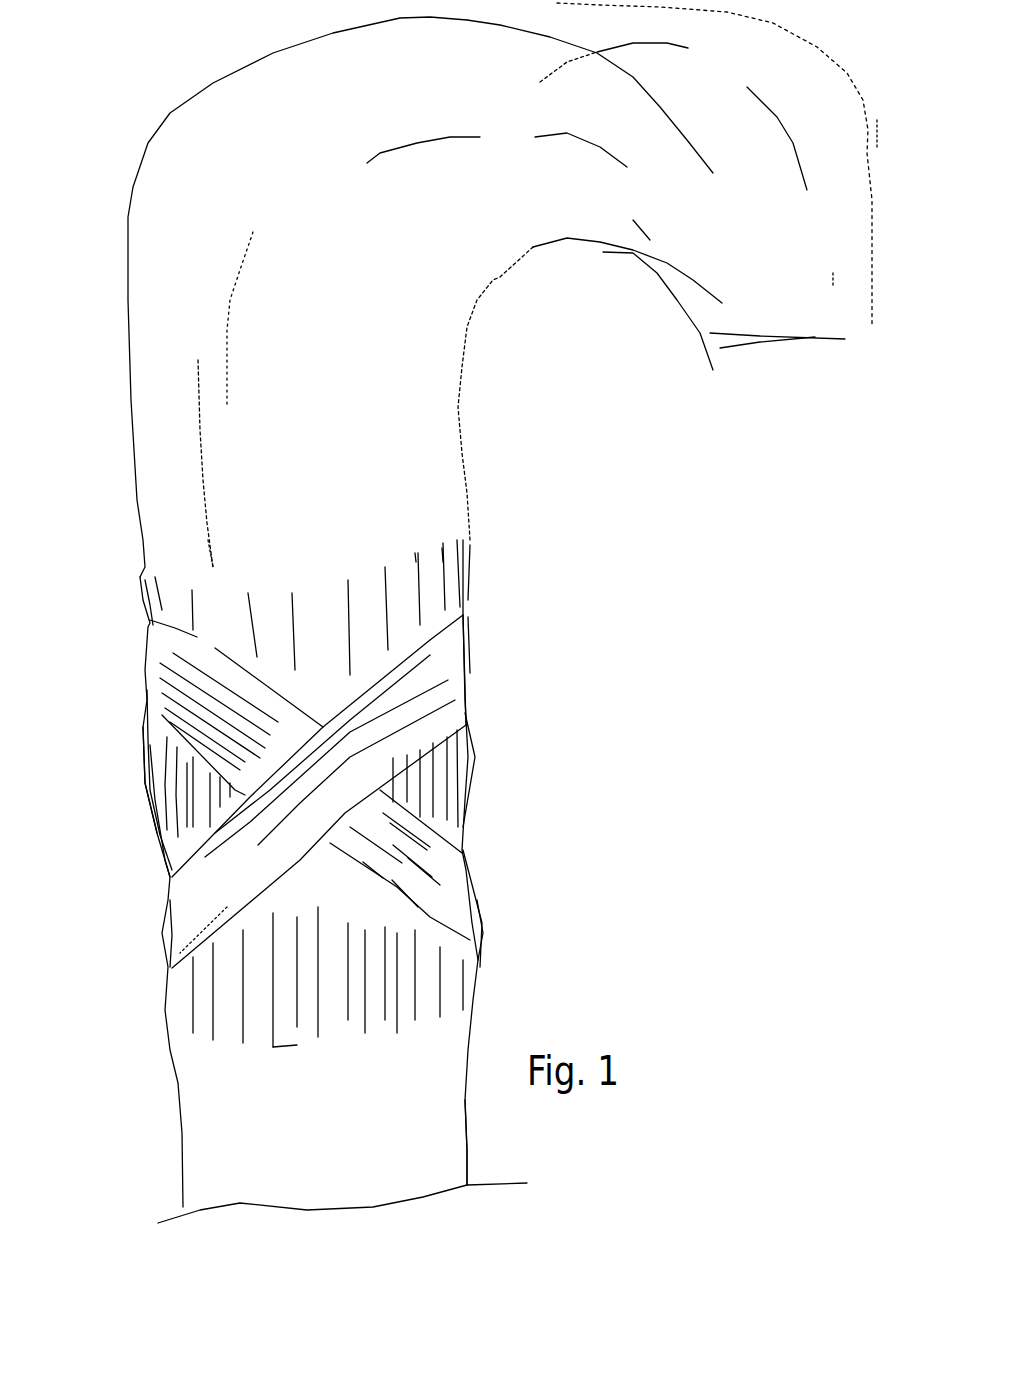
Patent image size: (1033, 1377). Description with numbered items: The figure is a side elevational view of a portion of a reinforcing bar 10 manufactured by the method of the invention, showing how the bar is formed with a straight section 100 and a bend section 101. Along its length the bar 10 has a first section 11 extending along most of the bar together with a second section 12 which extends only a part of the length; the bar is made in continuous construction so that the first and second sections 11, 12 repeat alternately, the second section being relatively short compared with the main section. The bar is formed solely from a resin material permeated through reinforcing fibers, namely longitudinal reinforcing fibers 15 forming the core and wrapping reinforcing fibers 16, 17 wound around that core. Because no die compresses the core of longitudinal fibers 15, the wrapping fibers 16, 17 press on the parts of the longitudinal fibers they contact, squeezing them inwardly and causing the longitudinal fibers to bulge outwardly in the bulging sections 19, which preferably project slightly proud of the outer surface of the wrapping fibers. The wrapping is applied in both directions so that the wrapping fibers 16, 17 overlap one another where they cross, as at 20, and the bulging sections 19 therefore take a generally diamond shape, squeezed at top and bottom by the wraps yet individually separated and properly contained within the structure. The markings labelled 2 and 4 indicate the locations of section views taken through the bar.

The bend section 101 is at (502, 290).
The straight section 100 is at (530, 876).
The reinforcing bar 10 is at (389, 753).
The first section 11 is at (92, 812).
The second section 12 is at (513, 1142).
The longitudinal reinforcing fibers 15 is at (260, 982).
The wrapping reinforcing fiber 16 is at (344, 794).
The wrapping reinforcing fiber 17 is at (349, 791).
The bulging sections 19 is at (283, 783).
The crossing of wrapping fibers 20 is at (328, 762).
The section line 2- 2 is at (300, 625).
The section line 4- 4 is at (312, 1133).